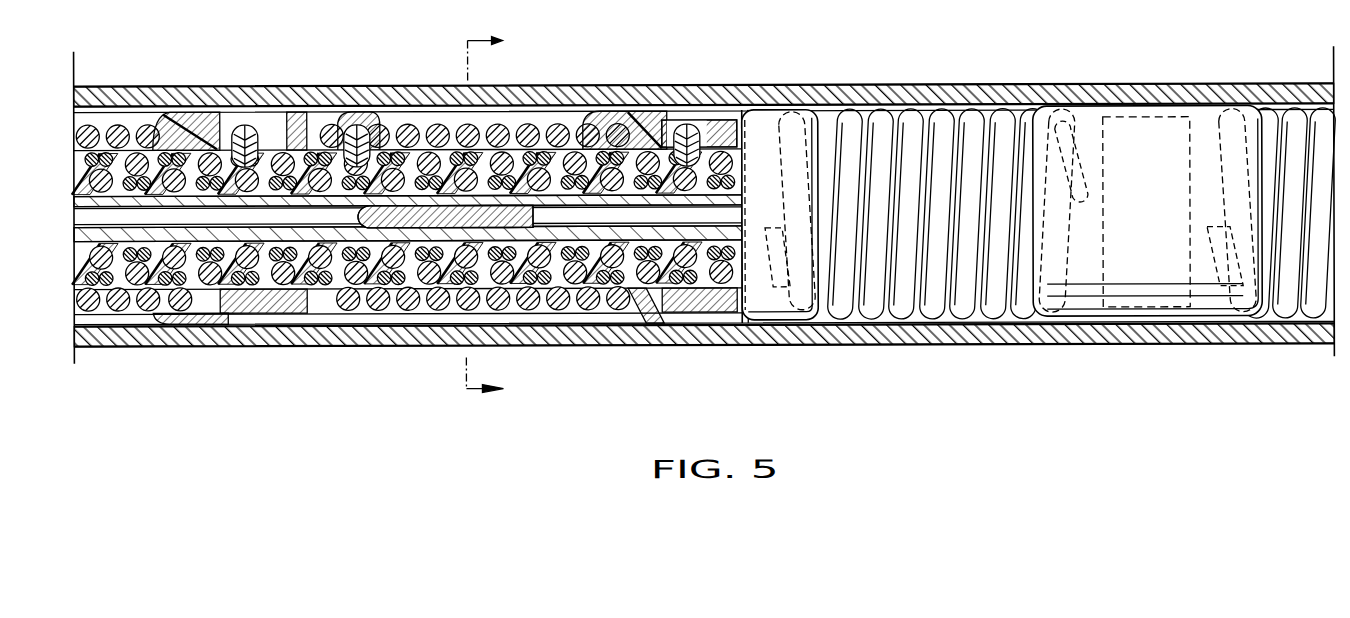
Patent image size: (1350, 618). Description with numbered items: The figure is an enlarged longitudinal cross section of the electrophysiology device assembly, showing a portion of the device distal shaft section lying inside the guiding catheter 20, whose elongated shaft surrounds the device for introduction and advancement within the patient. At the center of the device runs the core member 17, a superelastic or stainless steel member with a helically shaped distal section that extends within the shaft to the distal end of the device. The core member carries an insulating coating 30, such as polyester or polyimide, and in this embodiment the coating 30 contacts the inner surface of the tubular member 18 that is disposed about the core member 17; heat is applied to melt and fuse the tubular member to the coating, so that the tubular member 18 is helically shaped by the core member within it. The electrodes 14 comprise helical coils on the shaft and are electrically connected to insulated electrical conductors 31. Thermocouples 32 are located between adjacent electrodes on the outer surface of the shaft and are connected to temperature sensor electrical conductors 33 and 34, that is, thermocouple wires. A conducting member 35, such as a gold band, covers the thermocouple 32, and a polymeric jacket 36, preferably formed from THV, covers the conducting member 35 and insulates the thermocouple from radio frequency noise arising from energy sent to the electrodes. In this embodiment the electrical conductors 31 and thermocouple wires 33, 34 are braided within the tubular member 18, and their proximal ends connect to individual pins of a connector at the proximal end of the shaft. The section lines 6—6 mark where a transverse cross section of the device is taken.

The section lines 6— 6 is at (494, 215).
The electrodes 14 is at (404, 308).
The core member 17 is at (181, 217).
The tubular member 18 is at (83, 173).
The guiding catheter 20 is at (981, 85).
The insulating coating 30 is at (73, 233).
The insulated electrical conductors 31 is at (518, 298).
The thermocouple 32 is at (688, 124).
The temperature sensor electrical conductor 33 is at (590, 126).
The temperature sensor electrical conductor 34 is at (628, 122).
The conducting member 35 is at (737, 125).
The polymeric jacket 36 is at (640, 308).